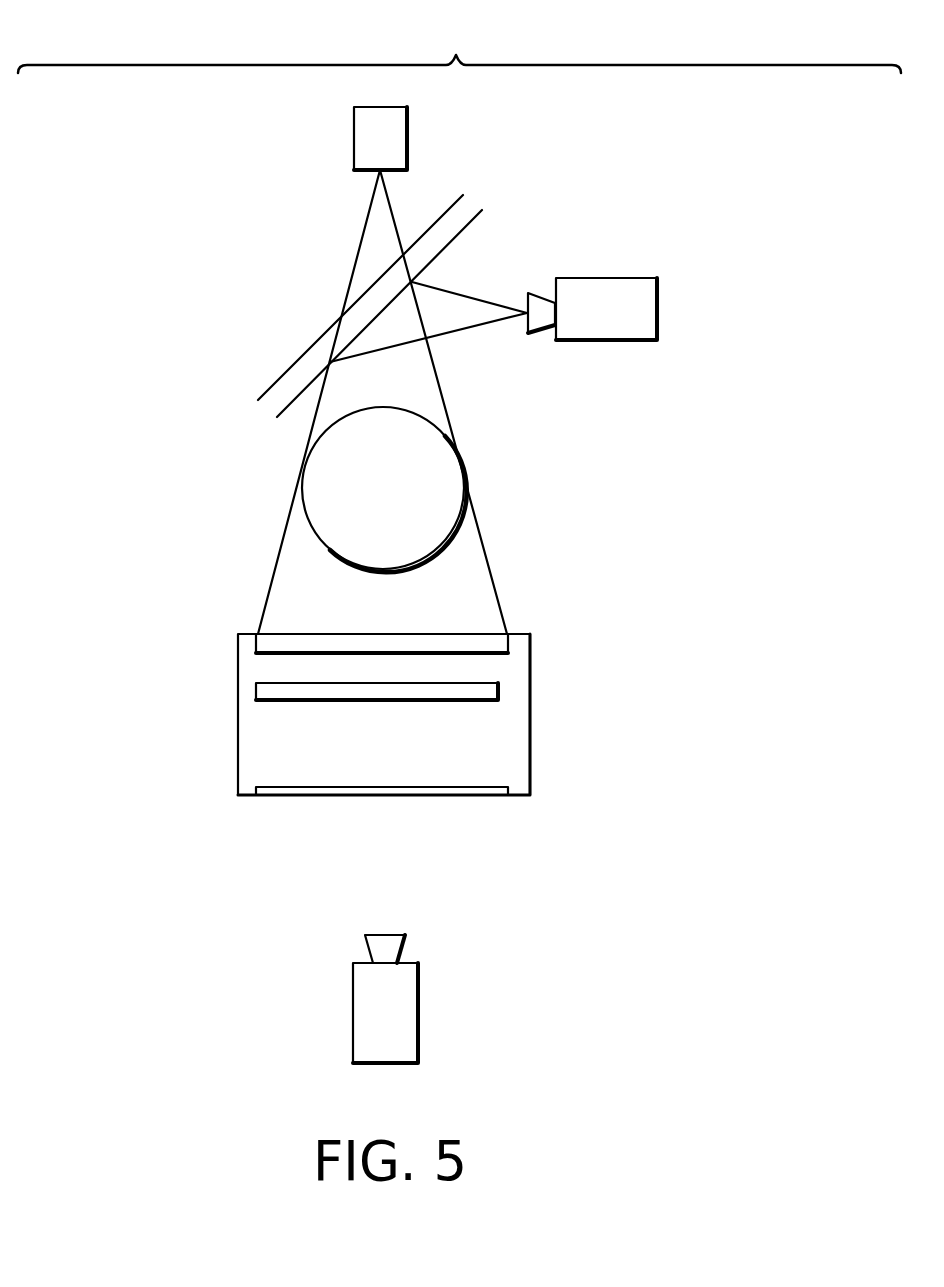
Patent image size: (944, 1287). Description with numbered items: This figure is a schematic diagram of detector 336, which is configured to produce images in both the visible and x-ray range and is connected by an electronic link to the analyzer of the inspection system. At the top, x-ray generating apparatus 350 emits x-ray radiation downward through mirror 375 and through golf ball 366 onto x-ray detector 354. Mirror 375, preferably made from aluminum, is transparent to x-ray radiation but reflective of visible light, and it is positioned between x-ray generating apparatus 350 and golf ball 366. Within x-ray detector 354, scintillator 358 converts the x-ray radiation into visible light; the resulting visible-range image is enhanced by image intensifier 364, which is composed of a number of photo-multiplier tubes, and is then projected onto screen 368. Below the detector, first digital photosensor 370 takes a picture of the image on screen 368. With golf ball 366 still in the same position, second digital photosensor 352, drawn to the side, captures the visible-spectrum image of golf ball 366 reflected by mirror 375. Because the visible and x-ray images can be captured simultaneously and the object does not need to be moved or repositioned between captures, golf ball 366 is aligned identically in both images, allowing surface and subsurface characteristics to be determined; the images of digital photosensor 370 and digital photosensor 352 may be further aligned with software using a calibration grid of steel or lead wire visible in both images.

The detector 336 is at (459, 40).
The x-ray generating apparatus 350 is at (354, 140).
The mirror 375 is at (482, 210).
The second digital photosensor 352 is at (657, 313).
The golf ball 366 is at (410, 504).
The x-ray detector 354 is at (238, 725).
The scintillator 358 is at (500, 642).
The image intensifier 364 is at (500, 693).
The screen 368 is at (490, 790).
The first digital photosensor 370 is at (418, 1020).